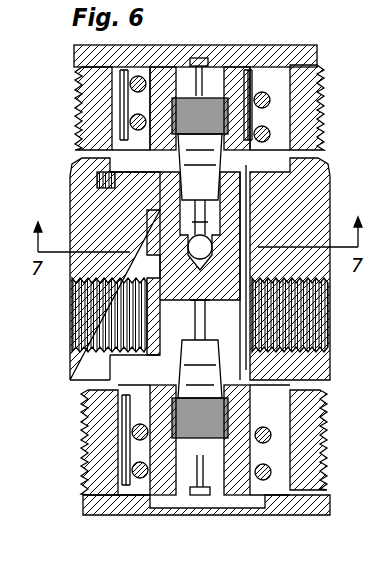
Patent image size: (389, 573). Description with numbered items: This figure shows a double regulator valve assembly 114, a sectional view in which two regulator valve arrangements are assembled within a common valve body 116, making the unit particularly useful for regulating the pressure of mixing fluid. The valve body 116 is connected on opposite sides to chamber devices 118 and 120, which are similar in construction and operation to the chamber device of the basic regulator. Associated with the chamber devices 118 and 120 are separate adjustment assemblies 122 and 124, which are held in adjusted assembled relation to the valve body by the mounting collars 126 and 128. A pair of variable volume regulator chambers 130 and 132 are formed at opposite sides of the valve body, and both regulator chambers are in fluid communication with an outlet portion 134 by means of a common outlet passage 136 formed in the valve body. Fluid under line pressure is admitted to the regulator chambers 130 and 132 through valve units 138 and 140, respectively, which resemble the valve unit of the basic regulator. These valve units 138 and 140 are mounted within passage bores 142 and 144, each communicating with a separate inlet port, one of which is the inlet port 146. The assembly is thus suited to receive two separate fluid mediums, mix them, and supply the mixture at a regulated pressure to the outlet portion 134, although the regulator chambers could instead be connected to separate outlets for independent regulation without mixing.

The double regulator valve assembly 114 is at (58, 159).
The valve body 116 is at (80, 215).
The chamber device 118 is at (196, 522).
The chamber device 120 is at (200, 58).
The adjustment assembly 122 is at (120, 518).
The adjustment assembly 124 is at (288, 45).
The mounting collar 126 is at (95, 445).
The mounting collar 128 is at (108, 108).
The variable volume regulator chamber 130 is at (127, 470).
The variable volume regulator chamber 132 is at (300, 160).
The outlet portion 134 is at (300, 328).
The common outlet passage 136 is at (250, 230).
The valve unit 138 is at (300, 414).
The valve unit 140 is at (185, 195).
The passage bore 142 is at (198, 366).
The passage bore 144 is at (186, 213).
The inlet port 146 is at (95, 310).